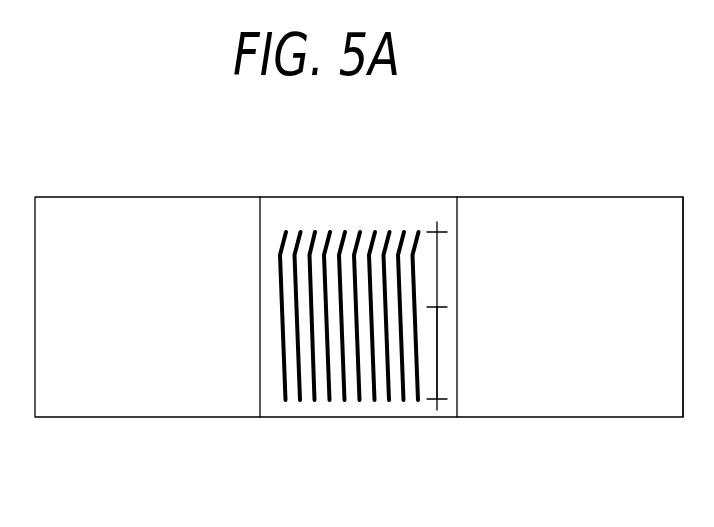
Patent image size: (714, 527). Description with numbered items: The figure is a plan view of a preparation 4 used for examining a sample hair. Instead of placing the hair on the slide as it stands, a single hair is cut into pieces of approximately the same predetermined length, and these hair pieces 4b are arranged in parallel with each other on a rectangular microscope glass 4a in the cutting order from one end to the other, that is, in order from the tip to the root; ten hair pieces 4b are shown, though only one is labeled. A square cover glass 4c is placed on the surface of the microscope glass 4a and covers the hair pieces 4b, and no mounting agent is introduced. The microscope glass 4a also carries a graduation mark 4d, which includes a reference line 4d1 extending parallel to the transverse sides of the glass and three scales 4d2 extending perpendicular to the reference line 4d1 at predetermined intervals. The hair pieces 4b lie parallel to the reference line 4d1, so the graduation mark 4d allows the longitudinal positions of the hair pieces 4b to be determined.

The preparation 4 is at (558, 178).
The microscope glass 4a is at (613, 387).
The hair pieces 4b is at (295, 310).
The cover glass 4c is at (353, 210).
The graduation mark 4d is at (437, 265).
The reference line 4d1 is at (438, 348).
The scales 4d2 is at (441, 232).